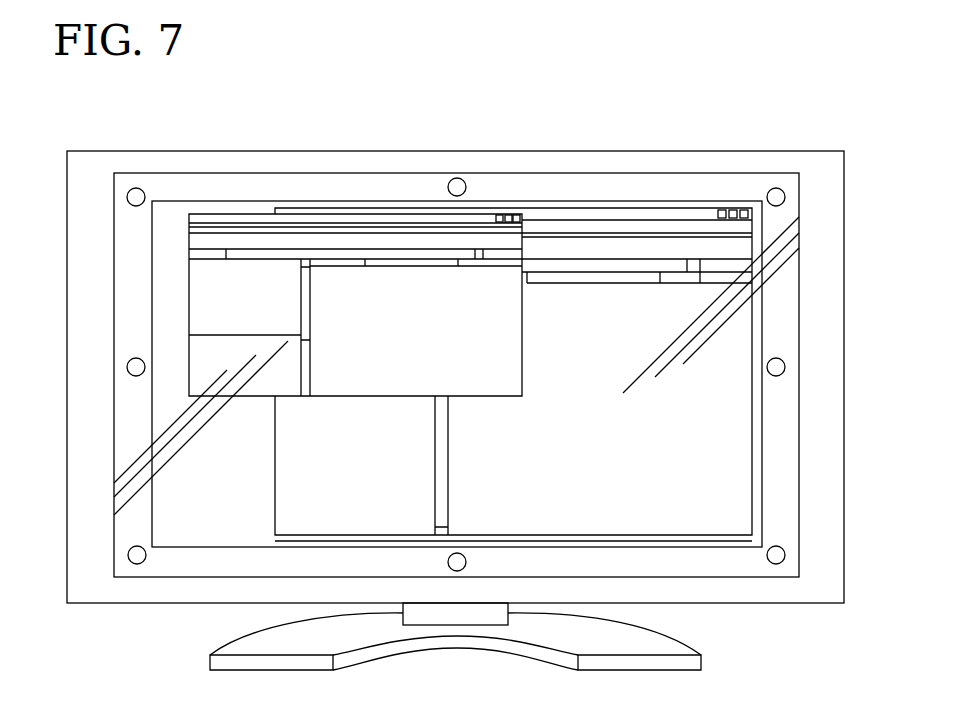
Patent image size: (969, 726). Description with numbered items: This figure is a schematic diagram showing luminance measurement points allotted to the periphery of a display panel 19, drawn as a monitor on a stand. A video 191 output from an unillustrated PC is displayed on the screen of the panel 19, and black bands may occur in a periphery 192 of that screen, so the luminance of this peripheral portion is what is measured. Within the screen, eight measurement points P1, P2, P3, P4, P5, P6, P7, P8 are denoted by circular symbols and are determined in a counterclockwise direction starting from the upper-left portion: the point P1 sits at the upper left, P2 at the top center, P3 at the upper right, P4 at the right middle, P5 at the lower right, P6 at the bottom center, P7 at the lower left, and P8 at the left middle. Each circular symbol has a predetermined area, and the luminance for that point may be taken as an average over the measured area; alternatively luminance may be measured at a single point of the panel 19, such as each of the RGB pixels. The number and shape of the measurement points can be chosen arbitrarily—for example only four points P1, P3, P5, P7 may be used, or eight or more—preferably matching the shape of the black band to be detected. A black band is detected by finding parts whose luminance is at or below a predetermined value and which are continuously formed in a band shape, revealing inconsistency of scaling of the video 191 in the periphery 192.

The panel 19 is at (845, 276).
The video 191 is at (176, 212).
The periphery 192 is at (611, 193).
The measurement point P1 is at (127, 197).
The measurement point P2 is at (457, 178).
The measurement point P3 is at (785, 197).
The measurement point P4 is at (785, 367).
The measurement point P5 is at (785, 555).
The measurement point P6 is at (457, 571).
The measurement point P7 is at (128, 555).
The measurement point P8 is at (127, 367).